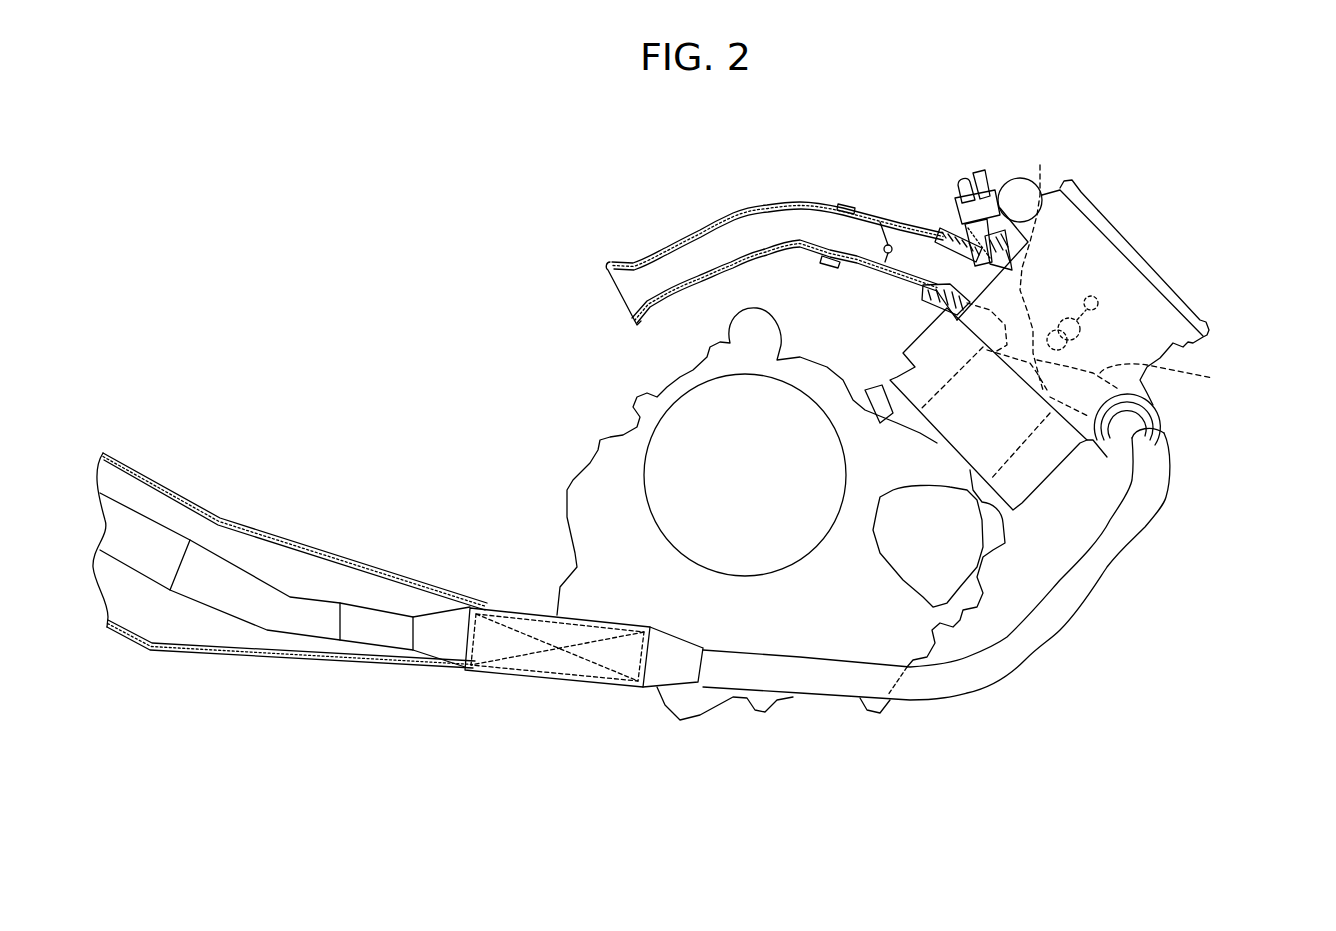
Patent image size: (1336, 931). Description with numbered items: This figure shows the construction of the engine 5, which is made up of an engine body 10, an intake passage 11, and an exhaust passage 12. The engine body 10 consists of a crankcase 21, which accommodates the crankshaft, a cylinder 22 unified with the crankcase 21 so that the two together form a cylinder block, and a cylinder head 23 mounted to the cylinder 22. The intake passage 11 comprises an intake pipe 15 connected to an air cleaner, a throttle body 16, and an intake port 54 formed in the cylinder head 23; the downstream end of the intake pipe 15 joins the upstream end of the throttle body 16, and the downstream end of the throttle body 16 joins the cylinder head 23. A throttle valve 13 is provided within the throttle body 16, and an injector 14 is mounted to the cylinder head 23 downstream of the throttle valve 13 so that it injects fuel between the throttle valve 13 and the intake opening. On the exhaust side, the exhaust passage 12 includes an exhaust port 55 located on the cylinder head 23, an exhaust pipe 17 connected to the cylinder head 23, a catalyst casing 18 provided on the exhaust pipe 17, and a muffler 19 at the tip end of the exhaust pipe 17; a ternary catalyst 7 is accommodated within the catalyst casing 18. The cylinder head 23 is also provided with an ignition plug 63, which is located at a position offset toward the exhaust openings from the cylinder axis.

The engine 5 is at (1183, 184).
The ternary catalyst 7 is at (513, 672).
The engine body 10 is at (1222, 306).
The intake passage 11 is at (826, 195).
The exhaust passage 12 is at (980, 690).
The throttle valve 13 is at (878, 212).
The injector 14 is at (1012, 187).
The intake pipe 15 is at (707, 225).
The throttle body 16 is at (923, 228).
The exhaust pipe 17 is at (1135, 540).
The catalyst casing 18 is at (553, 683).
The muffler 19 is at (198, 503).
The crankcase 21 is at (840, 597).
The cylinder 22 is at (1037, 480).
The cylinder head 23 is at (1088, 190).
The intake port 54 is at (1040, 165).
The exhaust port 55 is at (1180, 372).
The ignition plug 63 is at (1098, 306).